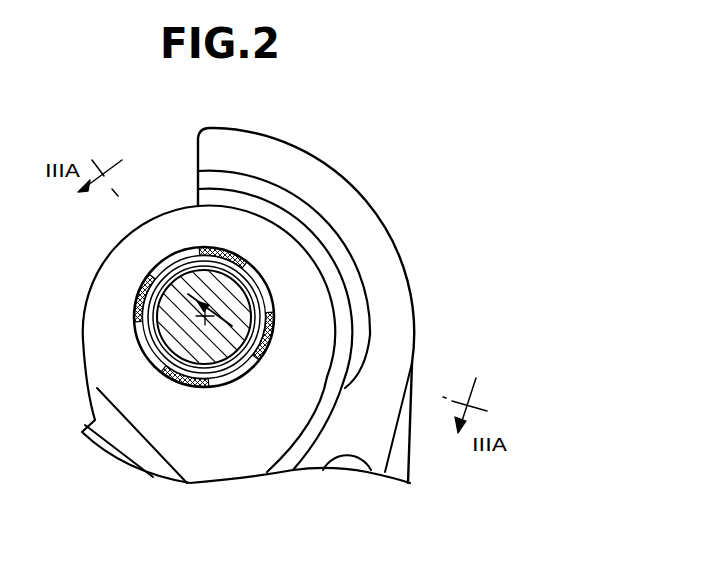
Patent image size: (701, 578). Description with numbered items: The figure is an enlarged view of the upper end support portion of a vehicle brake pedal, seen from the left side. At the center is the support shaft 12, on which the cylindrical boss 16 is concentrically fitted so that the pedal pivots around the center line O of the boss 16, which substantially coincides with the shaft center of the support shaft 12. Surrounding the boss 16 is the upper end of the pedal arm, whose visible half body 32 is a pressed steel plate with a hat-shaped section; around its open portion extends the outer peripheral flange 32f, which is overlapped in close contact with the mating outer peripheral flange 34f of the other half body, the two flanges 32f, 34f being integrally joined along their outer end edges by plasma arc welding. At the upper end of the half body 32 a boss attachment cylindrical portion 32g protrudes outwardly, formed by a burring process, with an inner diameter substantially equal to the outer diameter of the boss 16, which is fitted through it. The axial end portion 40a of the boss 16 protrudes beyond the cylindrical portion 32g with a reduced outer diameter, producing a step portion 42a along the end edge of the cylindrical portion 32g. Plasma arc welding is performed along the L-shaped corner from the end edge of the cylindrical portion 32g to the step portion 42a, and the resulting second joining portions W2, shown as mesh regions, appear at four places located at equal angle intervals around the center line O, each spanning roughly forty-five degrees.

The support shaft 12 is at (230, 298).
The boss 16 is at (253, 291).
The half body 32 is at (278, 403).
The outer peripheral flange 32f is at (293, 174).
The outer peripheral flange 34f is at (314, 305).
The boss attachment cylindrical portion 32g is at (164, 267).
The end portion 40a is at (183, 272).
The step portion 42a is at (150, 358).
The second joining portion W2 is at (207, 320).